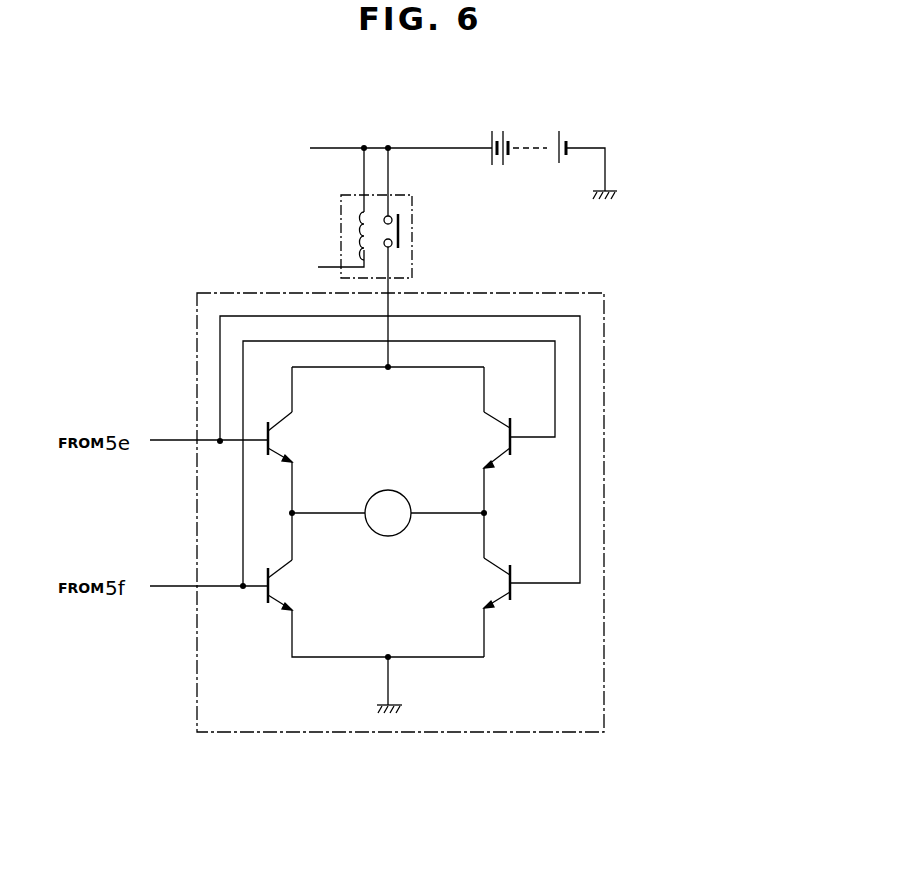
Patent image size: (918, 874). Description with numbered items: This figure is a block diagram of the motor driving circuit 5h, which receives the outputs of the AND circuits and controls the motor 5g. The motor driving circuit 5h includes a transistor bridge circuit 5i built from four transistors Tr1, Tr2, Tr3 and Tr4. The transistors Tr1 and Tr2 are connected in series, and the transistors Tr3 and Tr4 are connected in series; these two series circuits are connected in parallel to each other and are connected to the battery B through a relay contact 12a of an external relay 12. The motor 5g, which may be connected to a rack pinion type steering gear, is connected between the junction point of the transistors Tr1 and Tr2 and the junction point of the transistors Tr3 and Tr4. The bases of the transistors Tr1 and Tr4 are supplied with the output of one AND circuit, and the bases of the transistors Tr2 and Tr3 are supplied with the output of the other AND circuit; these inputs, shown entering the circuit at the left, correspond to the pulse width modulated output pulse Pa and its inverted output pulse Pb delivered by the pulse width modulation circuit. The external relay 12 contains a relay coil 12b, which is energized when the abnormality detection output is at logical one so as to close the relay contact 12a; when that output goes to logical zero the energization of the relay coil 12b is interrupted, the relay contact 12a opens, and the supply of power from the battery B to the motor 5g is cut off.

The battery B is at (561, 134).
The external relay 12 is at (388, 257).
The relay contact 12a is at (400, 226).
The relay coil 12b is at (364, 231).
The motor driving circuit 5h is at (604, 332).
The transistor bridge circuit 5i is at (365, 519).
The motor 5g is at (390, 490).
The transistor Tr1 is at (268, 436).
The transistor Tr2 is at (266, 597).
The transistor Tr3 is at (513, 455).
The transistor Tr4 is at (513, 593).
The output pulse Pa is at (162, 431).
The inverted output pulse Pb is at (162, 576).